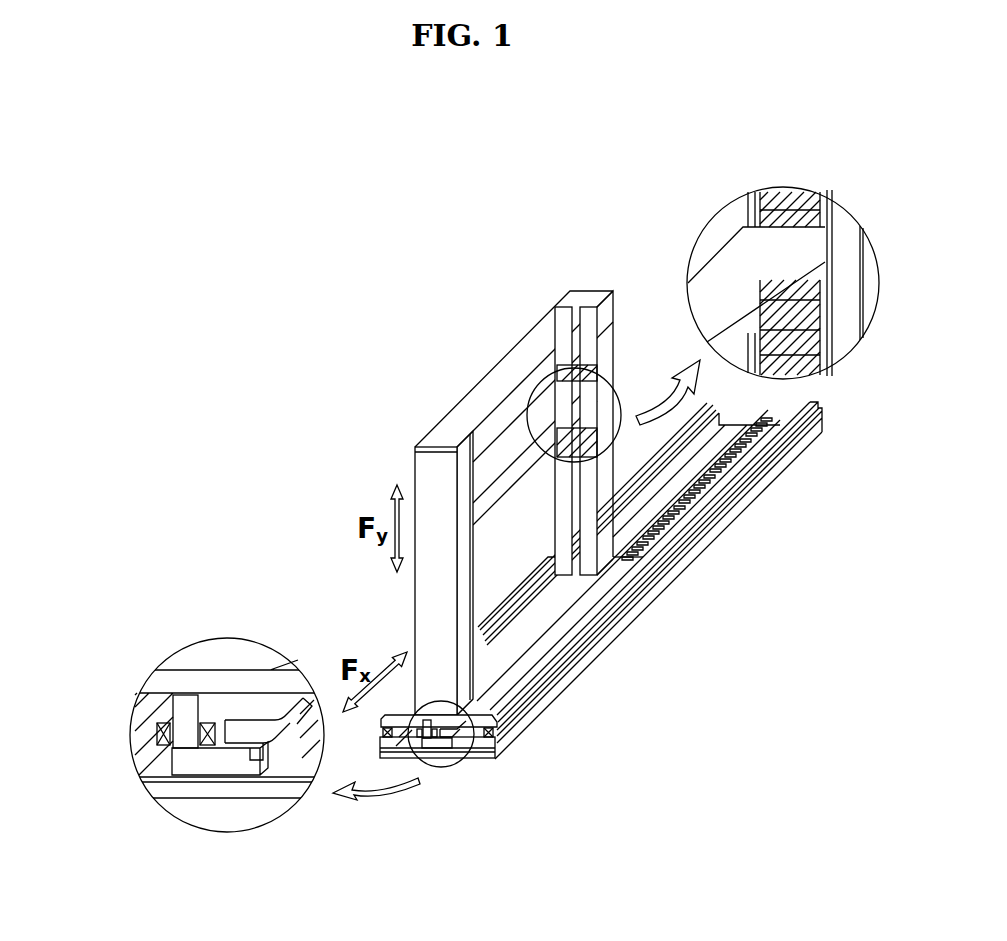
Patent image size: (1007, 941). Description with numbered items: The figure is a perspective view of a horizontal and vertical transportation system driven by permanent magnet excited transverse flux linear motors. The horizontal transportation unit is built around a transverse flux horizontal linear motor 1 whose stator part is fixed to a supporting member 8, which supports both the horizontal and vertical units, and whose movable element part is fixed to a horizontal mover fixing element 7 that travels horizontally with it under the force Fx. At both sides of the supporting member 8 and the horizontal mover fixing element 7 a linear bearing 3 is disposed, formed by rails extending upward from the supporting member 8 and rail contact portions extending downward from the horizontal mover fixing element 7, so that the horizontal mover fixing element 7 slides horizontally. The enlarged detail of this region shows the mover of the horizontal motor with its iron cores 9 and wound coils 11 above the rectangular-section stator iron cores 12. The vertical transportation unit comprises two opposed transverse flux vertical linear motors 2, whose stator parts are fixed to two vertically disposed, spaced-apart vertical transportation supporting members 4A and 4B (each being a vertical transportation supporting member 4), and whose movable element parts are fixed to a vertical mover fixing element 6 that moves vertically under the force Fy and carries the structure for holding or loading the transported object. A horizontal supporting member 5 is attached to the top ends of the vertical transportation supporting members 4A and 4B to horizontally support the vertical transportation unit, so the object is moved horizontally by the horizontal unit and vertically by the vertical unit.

The permanent magnet excited transverse flux horizontal linear motor 1 is at (275, 650).
The permanent magnet excited transverse flux vertical linear motor 2 is at (688, 268).
The linear bearing 3 is at (522, 723).
The vertical transportation supporting member 4 is at (845, 233).
The vertical transportation supporting member 4A is at (433, 480).
The vertical transportation supporting member 4B is at (605, 338).
The horizontal supporting member 5 is at (465, 413).
The vertical mover fixing element 6 is at (523, 437).
The horizontal mover fixing element 7 is at (547, 605).
The supporting member 8 is at (647, 513).
The iron core 9 is at (185, 712).
The coil 11 is at (202, 742).
The stator iron core 12 is at (282, 743).